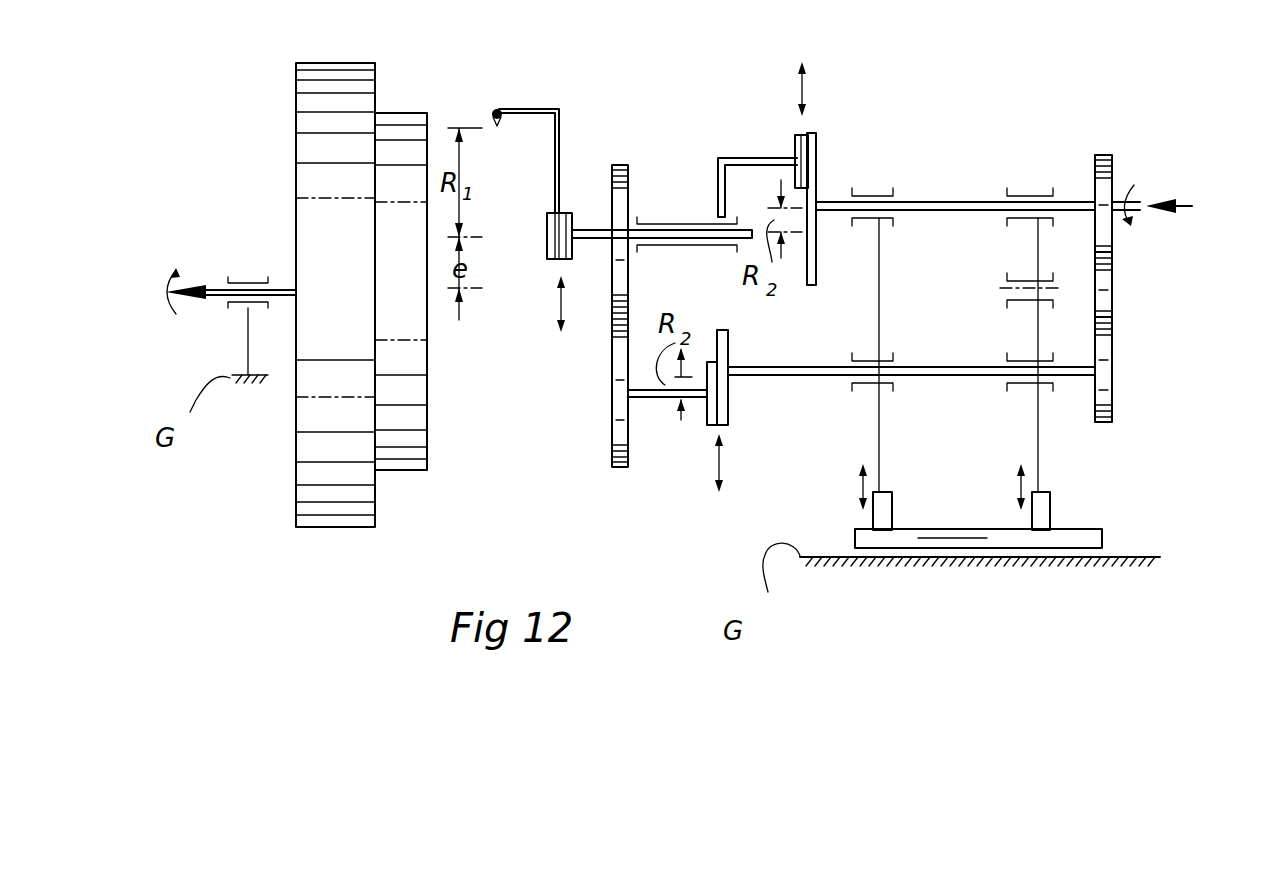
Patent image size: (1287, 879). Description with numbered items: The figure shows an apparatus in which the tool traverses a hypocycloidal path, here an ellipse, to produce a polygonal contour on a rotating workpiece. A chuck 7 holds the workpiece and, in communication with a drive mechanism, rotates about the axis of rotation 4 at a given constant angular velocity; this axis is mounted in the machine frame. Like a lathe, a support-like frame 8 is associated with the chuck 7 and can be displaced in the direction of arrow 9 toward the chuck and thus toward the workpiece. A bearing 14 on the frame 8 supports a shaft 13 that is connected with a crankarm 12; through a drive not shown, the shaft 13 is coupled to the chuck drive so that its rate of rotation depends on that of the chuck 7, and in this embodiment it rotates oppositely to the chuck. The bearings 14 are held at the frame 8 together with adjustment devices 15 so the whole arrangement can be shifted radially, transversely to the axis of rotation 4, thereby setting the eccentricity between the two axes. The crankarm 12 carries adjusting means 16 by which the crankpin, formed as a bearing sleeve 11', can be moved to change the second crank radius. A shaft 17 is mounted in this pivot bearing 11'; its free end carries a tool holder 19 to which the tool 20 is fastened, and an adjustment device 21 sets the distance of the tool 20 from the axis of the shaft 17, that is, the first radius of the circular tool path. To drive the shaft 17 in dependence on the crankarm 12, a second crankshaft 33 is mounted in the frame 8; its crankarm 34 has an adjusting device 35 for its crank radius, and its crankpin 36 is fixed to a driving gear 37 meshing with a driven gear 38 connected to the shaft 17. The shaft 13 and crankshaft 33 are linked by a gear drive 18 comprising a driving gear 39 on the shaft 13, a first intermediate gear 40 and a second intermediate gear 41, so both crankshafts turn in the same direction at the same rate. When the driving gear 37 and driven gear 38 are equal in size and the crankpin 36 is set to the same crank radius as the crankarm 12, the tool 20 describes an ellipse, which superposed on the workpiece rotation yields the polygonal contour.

The axis of rotation 4 is at (183, 278).
The chuck 7 is at (340, 72).
The support-like frame 8 is at (1055, 540).
The arrow 9 is at (945, 542).
The bearing sleeve 11' is at (687, 204).
The crankarm 12 is at (818, 185).
The shaft 13 is at (950, 202).
The bearing 14 is at (882, 192).
The adjustment devices 15 is at (893, 502).
The adjusting means 16 is at (806, 131).
The shaft 17 is at (680, 240).
The gear drive 18 is at (1184, 279).
The tool holder 19 is at (562, 146).
The tool 20 is at (494, 111).
The adjustment device 21 is at (546, 248).
The second crankshaft 33 is at (948, 367).
The crankarm 34 is at (730, 393).
The adjusting device 35 is at (708, 405).
The crankpin 36 is at (640, 400).
The driving gear 37 is at (612, 425).
The driven gear 38 is at (612, 290).
The driving gear 39 is at (1113, 170).
The first intermediate gear 40 is at (1113, 265).
The second intermediate gear 41 is at (1142, 369).